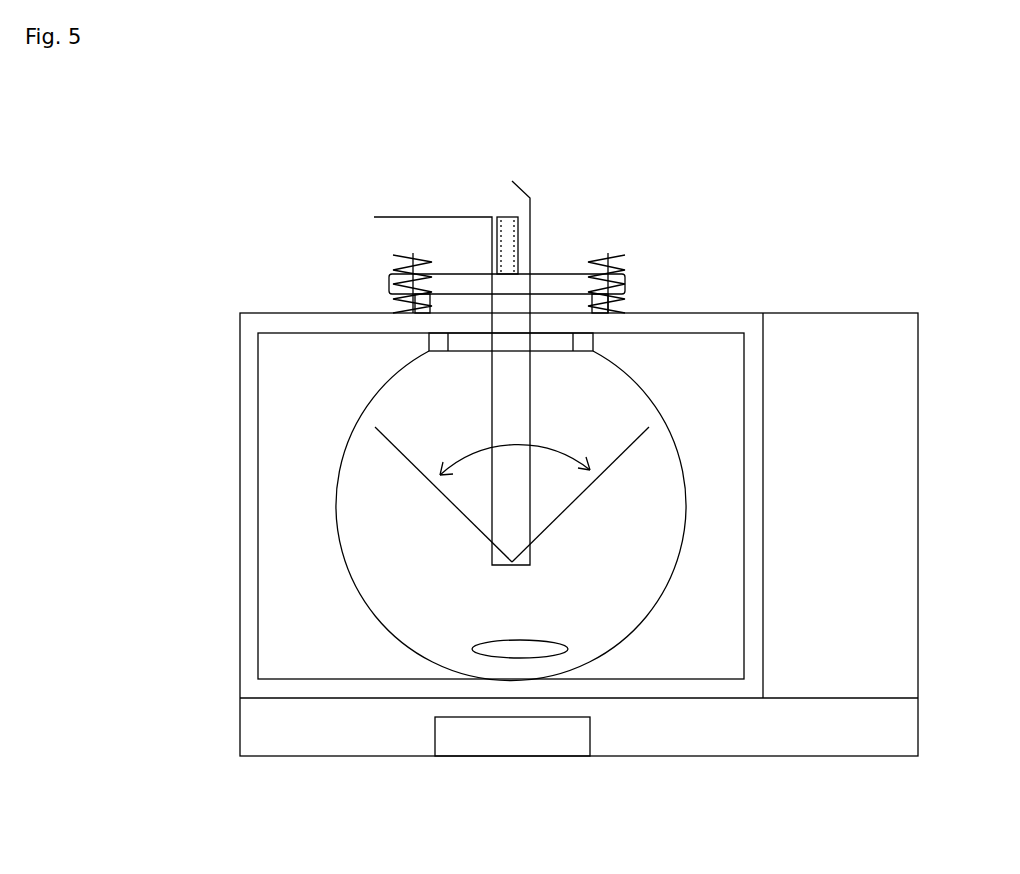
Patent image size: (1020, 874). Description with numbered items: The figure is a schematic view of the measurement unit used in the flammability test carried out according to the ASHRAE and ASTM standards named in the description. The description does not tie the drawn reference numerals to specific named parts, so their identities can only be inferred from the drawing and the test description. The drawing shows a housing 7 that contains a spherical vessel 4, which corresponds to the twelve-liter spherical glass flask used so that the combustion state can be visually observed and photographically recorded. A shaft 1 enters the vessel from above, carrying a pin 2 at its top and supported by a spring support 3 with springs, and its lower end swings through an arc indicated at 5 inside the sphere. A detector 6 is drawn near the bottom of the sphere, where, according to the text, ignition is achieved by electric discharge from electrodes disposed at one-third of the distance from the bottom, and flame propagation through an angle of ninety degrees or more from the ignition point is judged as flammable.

The support shaft 1 is at (512, 181).
The pin 2 is at (507, 212).
The spring support 3 is at (453, 255).
The spherical member 4 is at (357, 523).
The rod tip swing 5 is at (512, 516).
The detector 6 is at (512, 660).
The housing 7 is at (822, 660).